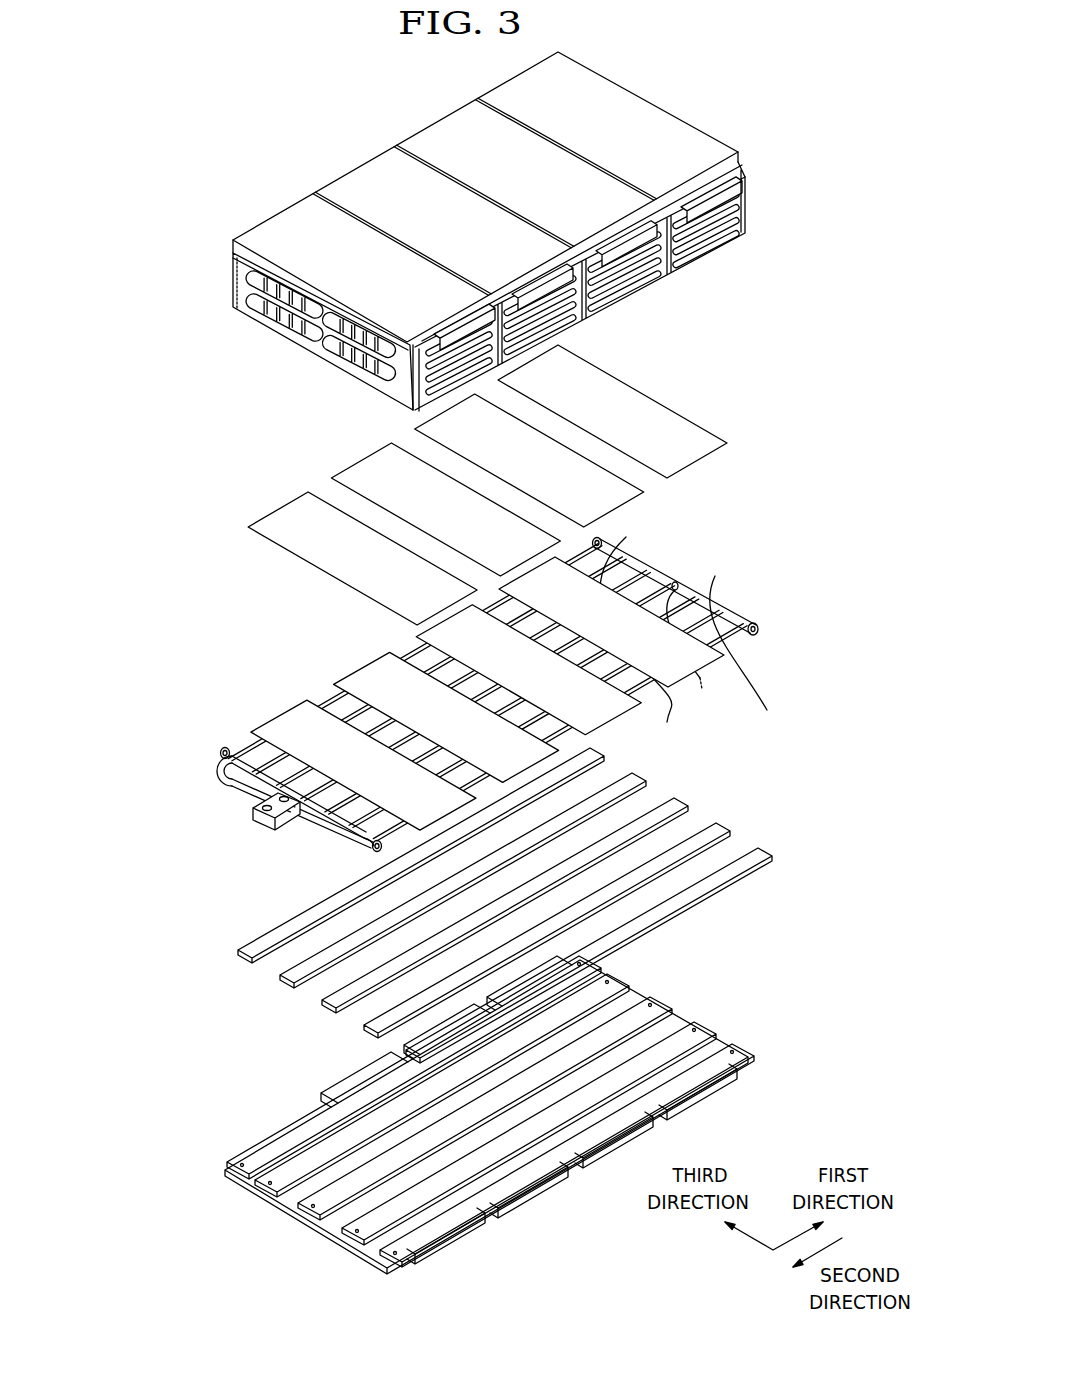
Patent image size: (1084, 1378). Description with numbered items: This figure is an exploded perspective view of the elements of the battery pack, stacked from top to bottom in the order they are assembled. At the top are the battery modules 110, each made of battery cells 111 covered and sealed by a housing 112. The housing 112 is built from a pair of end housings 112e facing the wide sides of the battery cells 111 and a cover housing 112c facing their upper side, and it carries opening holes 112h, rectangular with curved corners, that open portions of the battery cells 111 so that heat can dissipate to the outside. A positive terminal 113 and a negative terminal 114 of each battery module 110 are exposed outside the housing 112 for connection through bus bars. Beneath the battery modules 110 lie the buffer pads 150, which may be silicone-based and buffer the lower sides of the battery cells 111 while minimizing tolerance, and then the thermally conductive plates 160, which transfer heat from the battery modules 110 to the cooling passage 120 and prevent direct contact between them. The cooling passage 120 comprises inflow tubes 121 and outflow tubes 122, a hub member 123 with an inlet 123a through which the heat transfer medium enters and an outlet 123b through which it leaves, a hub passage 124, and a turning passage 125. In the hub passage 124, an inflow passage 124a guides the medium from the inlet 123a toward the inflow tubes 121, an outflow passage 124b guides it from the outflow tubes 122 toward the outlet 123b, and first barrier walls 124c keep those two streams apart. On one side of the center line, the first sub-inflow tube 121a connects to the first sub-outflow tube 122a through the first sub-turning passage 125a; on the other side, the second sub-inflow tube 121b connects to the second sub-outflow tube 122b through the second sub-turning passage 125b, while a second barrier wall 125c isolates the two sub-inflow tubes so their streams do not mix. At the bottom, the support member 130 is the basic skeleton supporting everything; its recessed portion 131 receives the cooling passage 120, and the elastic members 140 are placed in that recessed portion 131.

The battery module 110 is at (279, 224).
The battery cells 111 is at (231, 255).
The housing 112 is at (256, 331).
The end housings 112e is at (232, 283).
The opening holes 112h is at (256, 310).
The cover housing 112c is at (320, 283).
The positive terminal 113 is at (669, 273).
The negative terminal 114 is at (747, 222).
The cooling passage 120 is at (470, 696).
The inflow tubes 121 is at (529, 691).
The first sub-inflow tube 121a is at (626, 563).
The second sub-inflow tube 121b is at (665, 603).
The outflow tubes 122 is at (726, 572).
The first sub-outflow tube 122a is at (604, 543).
The second sub-outflow tube 122b is at (732, 621).
The hub member 123 is at (251, 761).
The inlet 123a is at (287, 795).
The outlet 123b is at (266, 805).
The hub passage 124 is at (232, 806).
The inflow passage 124a is at (318, 813).
The outflow passage 124b is at (214, 777).
The first barrier walls 124c is at (221, 757).
The turning passage 125 is at (716, 642).
The first sub-turning passage 125a is at (658, 642).
The second sub-turning passage 125b is at (765, 631).
The second barrier wall 125c is at (695, 651).
The support member 130 is at (486, 1115).
The recessed portion 131 is at (272, 1158).
The elastic members 140 is at (242, 957).
The buffer pad 150 is at (289, 506).
The thermally conductive plate 160 is at (360, 668).